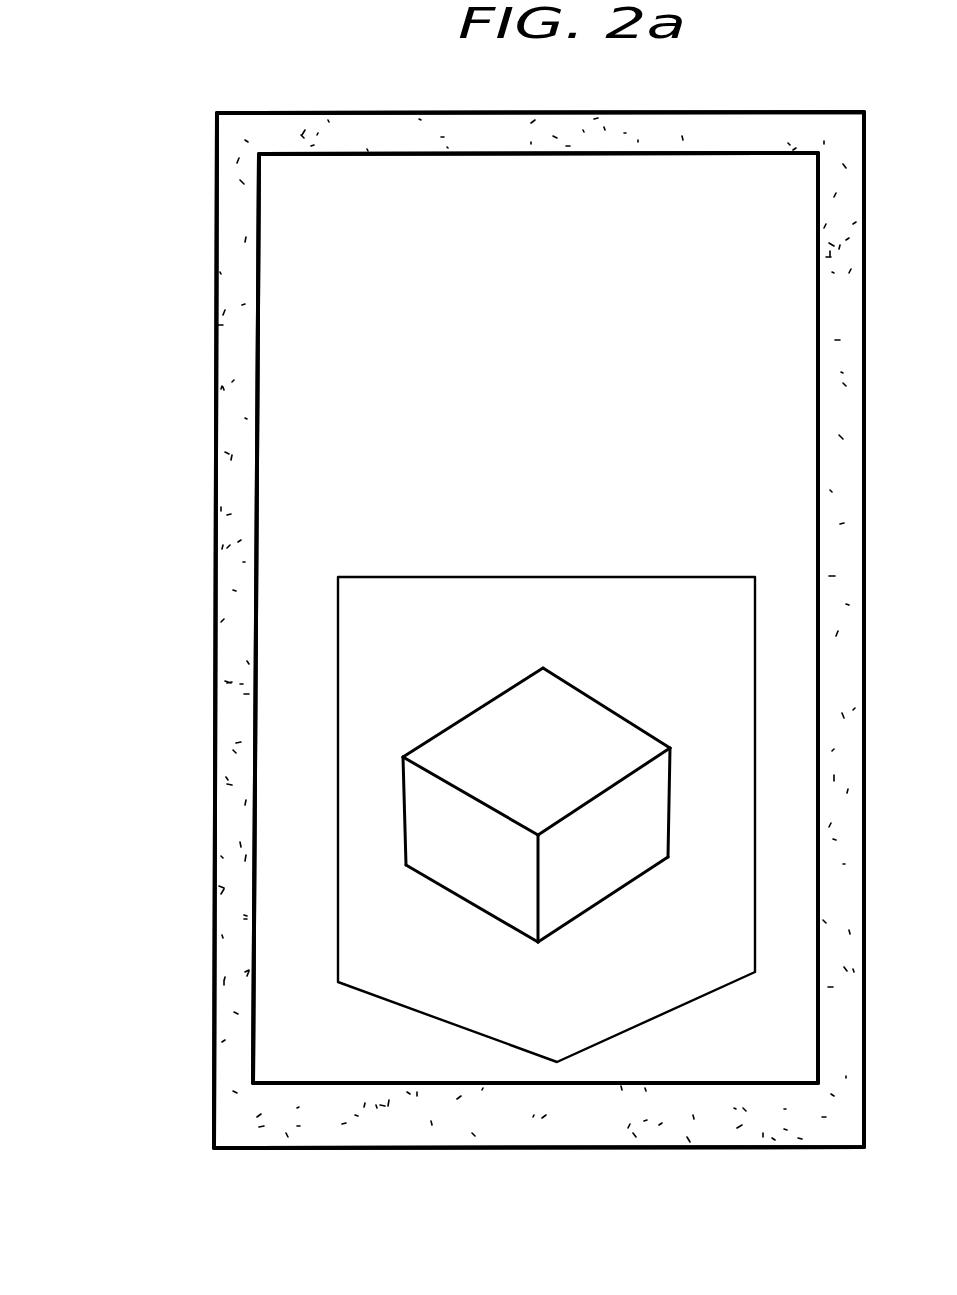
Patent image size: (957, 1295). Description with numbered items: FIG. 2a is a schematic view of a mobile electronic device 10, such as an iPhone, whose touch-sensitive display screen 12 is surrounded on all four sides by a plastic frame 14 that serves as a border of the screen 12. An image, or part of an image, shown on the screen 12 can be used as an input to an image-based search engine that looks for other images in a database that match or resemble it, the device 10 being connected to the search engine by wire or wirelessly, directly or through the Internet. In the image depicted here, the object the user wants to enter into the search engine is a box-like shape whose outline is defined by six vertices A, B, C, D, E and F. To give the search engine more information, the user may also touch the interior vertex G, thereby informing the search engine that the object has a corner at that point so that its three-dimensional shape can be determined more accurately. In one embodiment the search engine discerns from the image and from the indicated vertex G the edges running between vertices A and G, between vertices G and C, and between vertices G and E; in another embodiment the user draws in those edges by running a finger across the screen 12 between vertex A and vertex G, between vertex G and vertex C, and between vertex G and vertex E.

The mobile electronic device 10 is at (105, 1143).
The touch-sensitive display screen 12 is at (635, 277).
The plastic frame 14 is at (227, 363).
The vertex A is at (403, 757).
The vertex B is at (543, 668).
The vertex C is at (670, 748).
The vertex D is at (668, 857).
The vertex E is at (538, 942).
The vertex F is at (406, 865).
The vertex G is at (540, 818).